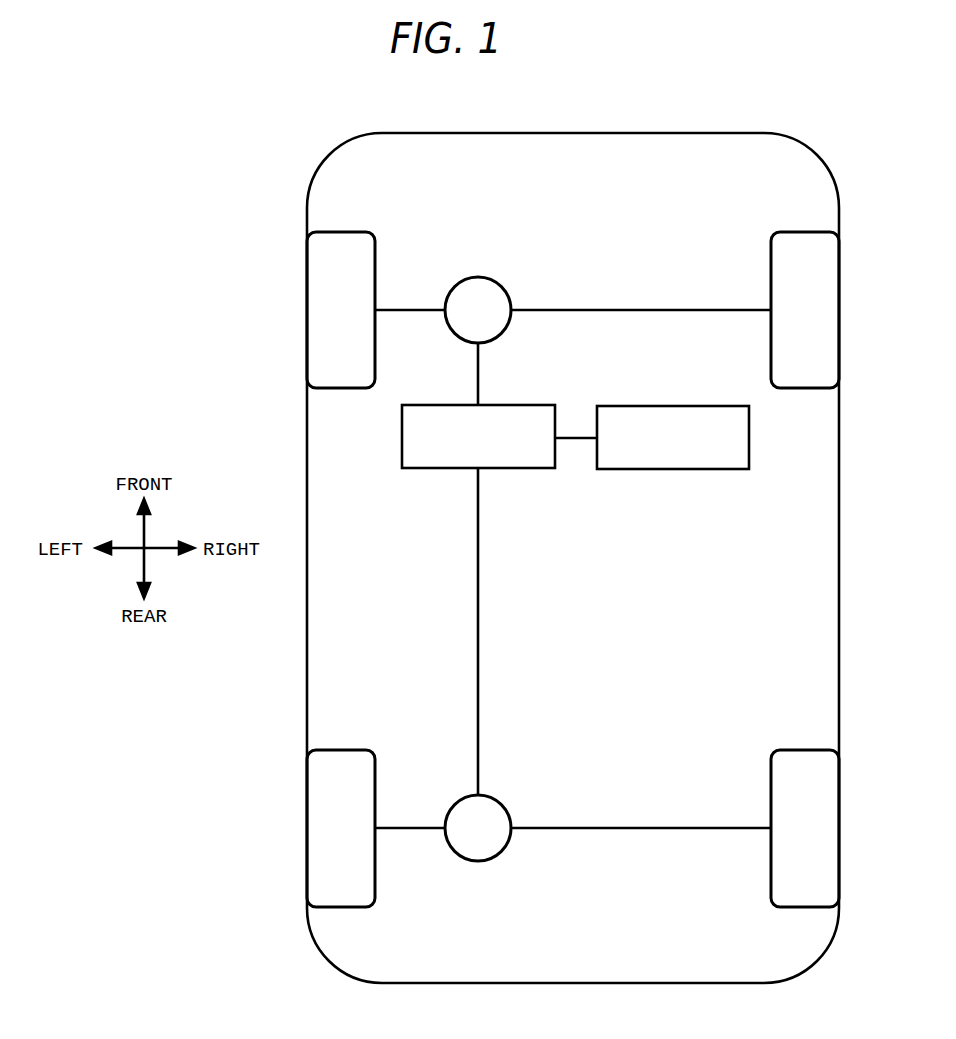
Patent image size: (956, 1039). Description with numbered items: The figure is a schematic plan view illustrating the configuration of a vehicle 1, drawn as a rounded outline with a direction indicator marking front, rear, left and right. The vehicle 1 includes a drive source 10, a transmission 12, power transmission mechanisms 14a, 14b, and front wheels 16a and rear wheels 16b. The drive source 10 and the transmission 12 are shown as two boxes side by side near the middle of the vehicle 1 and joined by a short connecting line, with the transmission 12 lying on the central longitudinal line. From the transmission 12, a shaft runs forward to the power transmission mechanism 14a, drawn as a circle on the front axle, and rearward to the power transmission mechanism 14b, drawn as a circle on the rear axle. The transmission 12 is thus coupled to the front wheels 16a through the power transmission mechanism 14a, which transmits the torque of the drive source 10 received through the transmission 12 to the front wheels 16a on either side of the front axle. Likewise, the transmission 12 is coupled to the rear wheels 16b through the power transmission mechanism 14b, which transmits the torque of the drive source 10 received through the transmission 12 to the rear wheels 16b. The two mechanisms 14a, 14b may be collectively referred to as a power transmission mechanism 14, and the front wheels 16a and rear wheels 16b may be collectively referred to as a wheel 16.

The vehicle 1 is at (573, 108).
The drive source 10 is at (675, 405).
The transmission 12 is at (537, 404).
The power transmission mechanism 14 is at (500, 573).
The power transmission mechanism 14a is at (480, 277).
The power transmission mechanism 14b is at (476, 862).
The wheel 16 is at (573, 545).
The front wheels 16a is at (343, 231).
The rear wheels 16b is at (343, 749).